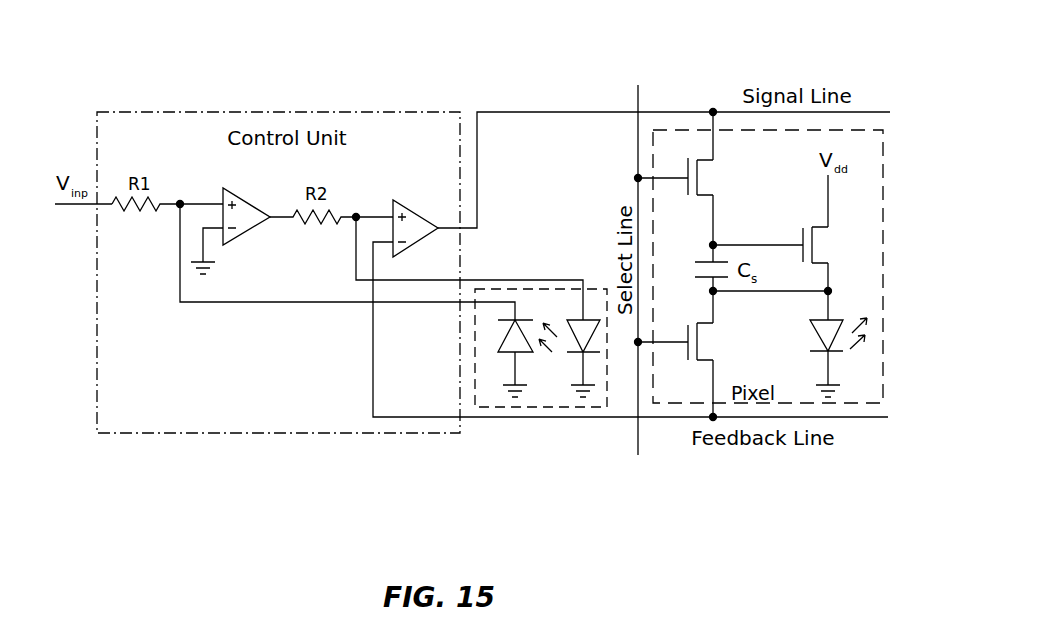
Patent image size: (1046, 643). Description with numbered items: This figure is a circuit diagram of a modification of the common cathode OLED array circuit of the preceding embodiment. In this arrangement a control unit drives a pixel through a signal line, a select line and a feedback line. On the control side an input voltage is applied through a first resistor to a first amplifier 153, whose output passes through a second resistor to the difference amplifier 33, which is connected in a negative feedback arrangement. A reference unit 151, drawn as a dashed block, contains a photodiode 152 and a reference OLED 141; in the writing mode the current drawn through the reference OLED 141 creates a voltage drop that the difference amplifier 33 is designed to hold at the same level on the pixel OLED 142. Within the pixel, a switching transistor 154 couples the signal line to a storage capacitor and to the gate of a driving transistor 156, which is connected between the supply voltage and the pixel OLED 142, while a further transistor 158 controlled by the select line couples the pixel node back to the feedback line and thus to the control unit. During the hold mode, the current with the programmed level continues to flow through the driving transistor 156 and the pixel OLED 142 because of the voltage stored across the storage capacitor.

The first operational amplifier 153 is at (240, 215).
The difference amplifier 33 is at (397, 195).
The optical coupling unit 151 is at (535, 287).
The photodiode 152 is at (500, 332).
The reference OLED 141 is at (563, 353).
The switching transistor 154 is at (732, 182).
The driving transistor 156 is at (828, 245).
The feedback transistor 158 is at (718, 353).
The pixel OLED 142 is at (842, 352).